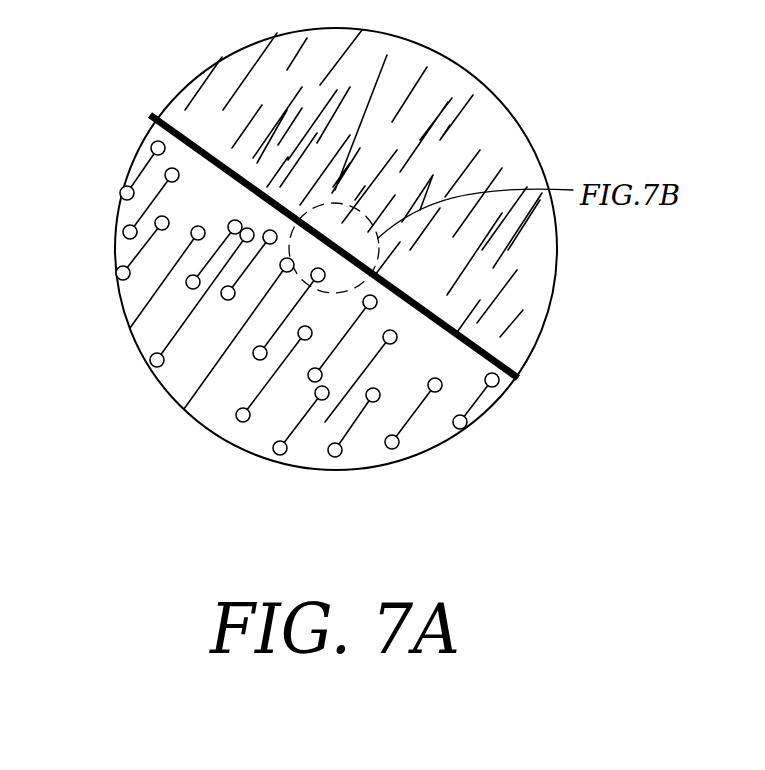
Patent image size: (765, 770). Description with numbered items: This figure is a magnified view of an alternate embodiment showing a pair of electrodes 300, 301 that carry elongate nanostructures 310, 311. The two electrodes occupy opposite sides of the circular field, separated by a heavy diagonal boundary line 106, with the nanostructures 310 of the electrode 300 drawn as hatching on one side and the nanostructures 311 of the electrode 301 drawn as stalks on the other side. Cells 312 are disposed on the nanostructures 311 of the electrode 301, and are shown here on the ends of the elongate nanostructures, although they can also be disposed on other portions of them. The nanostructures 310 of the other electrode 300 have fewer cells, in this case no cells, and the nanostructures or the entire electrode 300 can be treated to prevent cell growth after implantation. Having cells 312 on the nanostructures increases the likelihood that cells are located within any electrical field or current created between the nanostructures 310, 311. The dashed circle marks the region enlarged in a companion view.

The electrode 300 is at (537, 293).
The elongate nanostructures 310 is at (263, 57).
The boundary line 106 is at (150, 116).
The elongate nanostructures 311 is at (140, 172).
The electrode 301 is at (120, 253).
The cells 312 is at (498, 386).